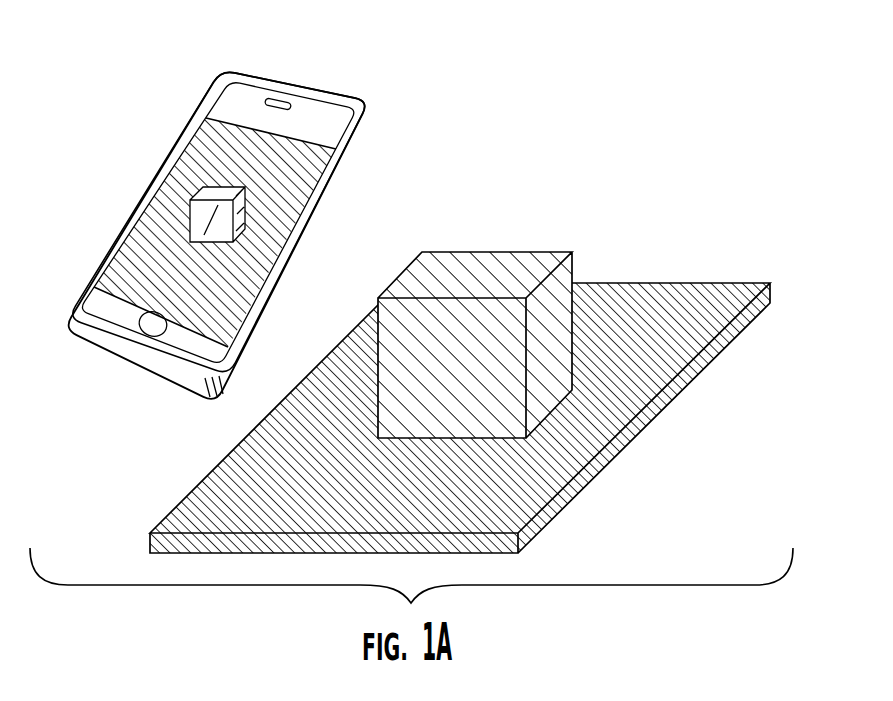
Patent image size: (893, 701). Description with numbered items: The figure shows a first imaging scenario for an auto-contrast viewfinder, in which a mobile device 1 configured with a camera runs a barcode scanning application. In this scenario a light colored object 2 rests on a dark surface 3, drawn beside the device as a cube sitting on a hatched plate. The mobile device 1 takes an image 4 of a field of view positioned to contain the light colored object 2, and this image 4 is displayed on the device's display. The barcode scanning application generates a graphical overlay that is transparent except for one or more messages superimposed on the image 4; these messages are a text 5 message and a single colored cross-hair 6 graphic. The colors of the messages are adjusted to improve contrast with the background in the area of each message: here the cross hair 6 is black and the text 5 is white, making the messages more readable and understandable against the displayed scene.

The mobile device 1 is at (288, 72).
The light colored object 2 is at (486, 278).
The dark surface 3 is at (681, 266).
The image 4 is at (262, 208).
The text 5 is at (128, 270).
The cross-hair 6 is at (197, 221).